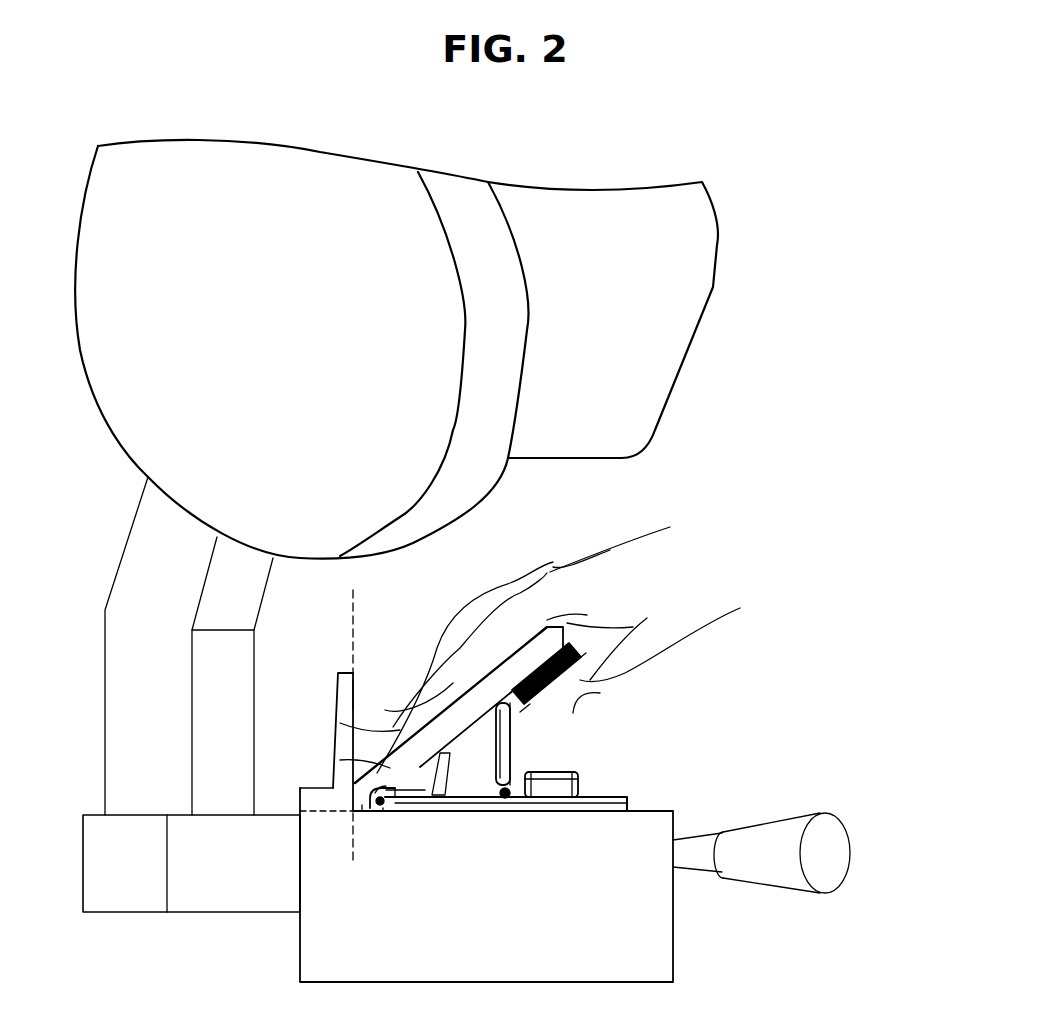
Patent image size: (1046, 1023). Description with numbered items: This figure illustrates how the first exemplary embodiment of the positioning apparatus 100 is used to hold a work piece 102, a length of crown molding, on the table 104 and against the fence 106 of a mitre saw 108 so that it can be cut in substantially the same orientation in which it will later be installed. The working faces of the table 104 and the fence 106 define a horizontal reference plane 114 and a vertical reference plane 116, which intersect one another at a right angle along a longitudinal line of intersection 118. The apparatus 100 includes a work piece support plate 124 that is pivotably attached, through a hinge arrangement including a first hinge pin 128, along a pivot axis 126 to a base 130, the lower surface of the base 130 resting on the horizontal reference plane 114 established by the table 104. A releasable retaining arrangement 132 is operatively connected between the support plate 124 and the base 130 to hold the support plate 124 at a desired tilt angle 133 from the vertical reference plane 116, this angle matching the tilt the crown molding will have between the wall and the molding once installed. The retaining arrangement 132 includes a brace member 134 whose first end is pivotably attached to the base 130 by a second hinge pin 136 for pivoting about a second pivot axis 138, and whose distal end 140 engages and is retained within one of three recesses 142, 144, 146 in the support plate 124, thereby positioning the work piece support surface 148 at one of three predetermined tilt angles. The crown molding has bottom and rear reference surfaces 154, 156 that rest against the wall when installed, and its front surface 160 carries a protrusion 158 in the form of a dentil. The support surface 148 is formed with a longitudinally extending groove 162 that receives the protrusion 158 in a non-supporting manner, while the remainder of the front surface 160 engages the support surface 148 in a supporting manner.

The positioning apparatus 100 is at (623, 797).
The work piece 102 is at (419, 761).
The table 104 is at (648, 811).
The fence 106 is at (347, 693).
The mitre saw 108 is at (485, 465).
The horizontal reference plane 114 is at (660, 811).
The vertical reference plane 116 is at (355, 598).
The longitudinal line of intersection 118 is at (353, 807).
The work piece support plate 124 is at (575, 735).
The pivot axis 126 is at (390, 807).
The first hinge pin 128 is at (383, 813).
The base 130 is at (643, 810).
The releasable retaining arrangement 132 is at (520, 757).
The tilt angle 133 is at (362, 695).
The brace member 134 is at (482, 797).
The second hinge pin 136 is at (503, 798).
The second pivot axis 138 is at (552, 800).
The distal end 140 is at (497, 765).
The recess 142 is at (512, 648).
The recess 144 is at (487, 648).
The recess 146 is at (447, 673).
The work piece support surface 148 is at (533, 650).
The bottom reference surface 154 is at (363, 817).
The rear reference surface 156 is at (360, 803).
The protrusion 158 is at (385, 770).
The front surface 160 is at (622, 682).
The groove 162 is at (398, 713).